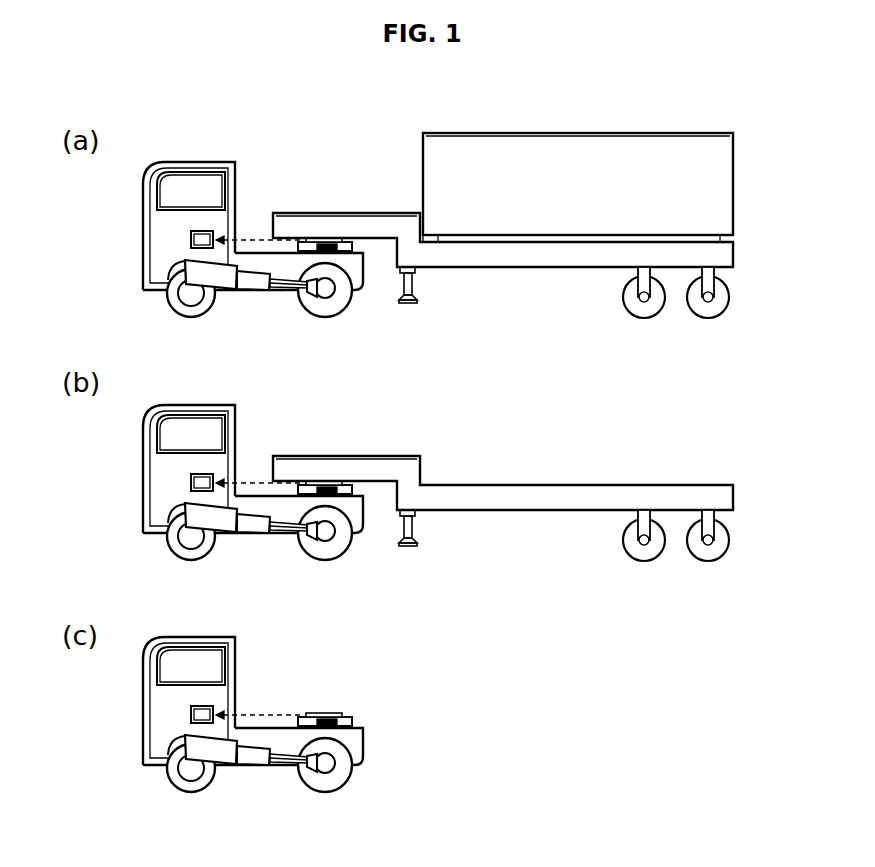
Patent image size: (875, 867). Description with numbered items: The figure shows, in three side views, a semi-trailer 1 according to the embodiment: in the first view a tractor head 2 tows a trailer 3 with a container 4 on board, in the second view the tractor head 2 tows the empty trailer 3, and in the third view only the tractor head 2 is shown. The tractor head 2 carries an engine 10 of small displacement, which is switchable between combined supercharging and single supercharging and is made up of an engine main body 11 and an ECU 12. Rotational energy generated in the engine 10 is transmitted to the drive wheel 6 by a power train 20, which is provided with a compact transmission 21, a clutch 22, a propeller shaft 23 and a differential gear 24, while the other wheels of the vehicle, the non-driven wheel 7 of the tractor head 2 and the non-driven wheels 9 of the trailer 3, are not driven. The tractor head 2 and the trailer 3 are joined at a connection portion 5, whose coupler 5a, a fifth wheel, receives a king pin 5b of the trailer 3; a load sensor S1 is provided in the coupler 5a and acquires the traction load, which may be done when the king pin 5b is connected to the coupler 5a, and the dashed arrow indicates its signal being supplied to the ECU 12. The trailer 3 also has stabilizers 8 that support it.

The semi-trailer 1 is at (438, 482).
The tractor head 2 is at (240, 182).
The trailer 3 is at (408, 203).
The container 4 is at (743, 174).
The connection portion 5 is at (351, 492).
The coupler 5a is at (352, 252).
The king pin 5b is at (325, 240).
The drive wheel 6 is at (351, 310).
The non-driven wheel 7 is at (178, 314).
The stabilizer 8 is at (411, 304).
The non-driven wheel 9 is at (645, 319).
The engine 10 is at (216, 547).
The engine main body 11 is at (207, 306).
The ECU 12 is at (191, 238).
The power train 20 is at (254, 265).
The transmission 21 is at (266, 291).
The clutch 22 is at (236, 291).
The propeller shaft 23 is at (296, 291).
The differential gear 24 is at (322, 299).
The load sensor S1 is at (305, 240).